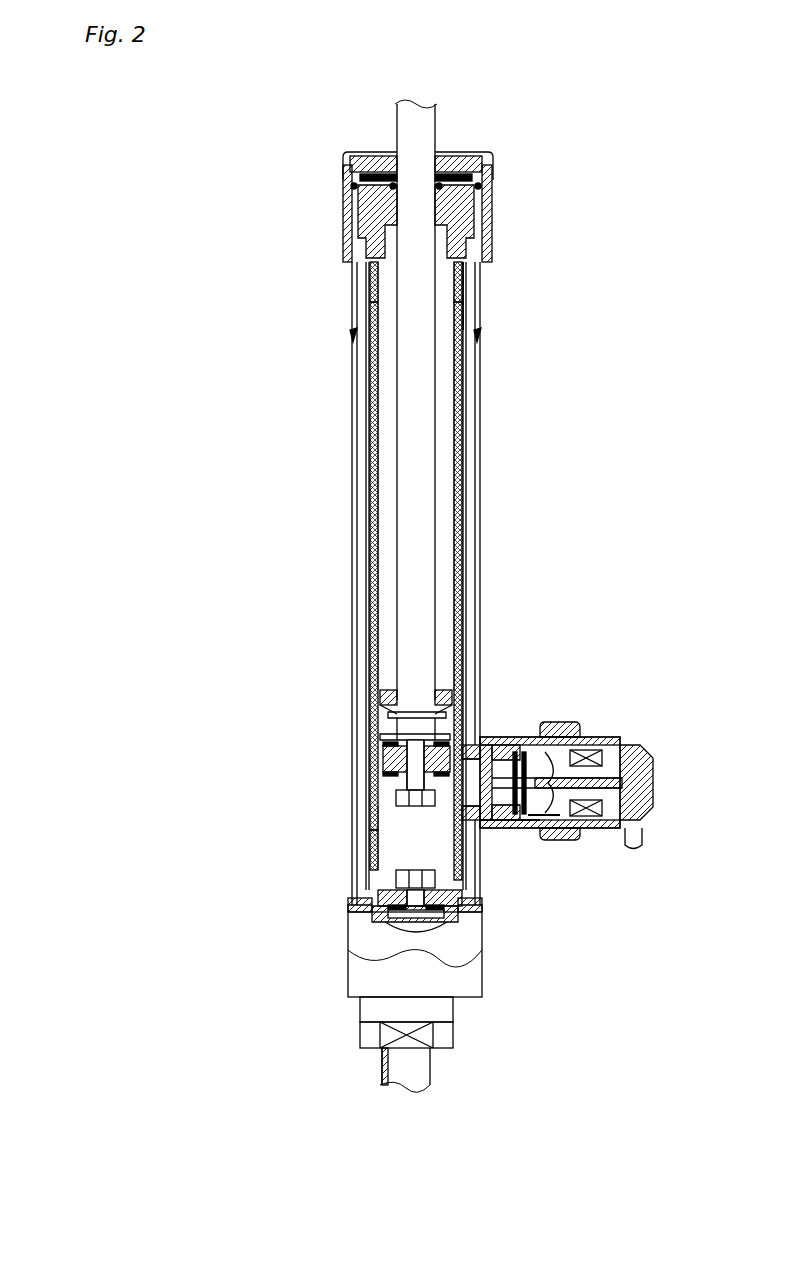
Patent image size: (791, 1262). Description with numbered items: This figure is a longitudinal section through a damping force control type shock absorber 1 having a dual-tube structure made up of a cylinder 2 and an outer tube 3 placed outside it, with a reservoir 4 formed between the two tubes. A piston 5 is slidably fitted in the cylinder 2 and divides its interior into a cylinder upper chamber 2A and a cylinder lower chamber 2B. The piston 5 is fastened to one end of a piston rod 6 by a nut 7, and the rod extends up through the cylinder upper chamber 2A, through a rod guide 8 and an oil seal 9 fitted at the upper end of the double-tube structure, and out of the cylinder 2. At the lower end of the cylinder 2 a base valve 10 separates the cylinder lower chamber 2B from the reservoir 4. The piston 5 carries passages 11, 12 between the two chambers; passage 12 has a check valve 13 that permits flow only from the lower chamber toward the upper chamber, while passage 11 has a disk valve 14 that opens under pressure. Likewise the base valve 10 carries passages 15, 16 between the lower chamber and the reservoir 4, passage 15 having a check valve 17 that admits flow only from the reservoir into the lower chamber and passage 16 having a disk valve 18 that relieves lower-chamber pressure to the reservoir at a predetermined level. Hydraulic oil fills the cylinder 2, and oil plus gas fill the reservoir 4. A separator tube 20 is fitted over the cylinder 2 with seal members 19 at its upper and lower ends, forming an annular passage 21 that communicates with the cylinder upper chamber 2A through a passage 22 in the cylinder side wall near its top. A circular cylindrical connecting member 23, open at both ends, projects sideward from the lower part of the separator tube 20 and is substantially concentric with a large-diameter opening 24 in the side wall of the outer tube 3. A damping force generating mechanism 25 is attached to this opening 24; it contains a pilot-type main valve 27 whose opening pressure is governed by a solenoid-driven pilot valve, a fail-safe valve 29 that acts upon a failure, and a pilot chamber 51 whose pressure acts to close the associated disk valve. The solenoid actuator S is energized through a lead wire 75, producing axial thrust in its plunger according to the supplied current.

The damping force control type shock absorber 1 is at (562, 238).
The cylinder 2 is at (464, 404).
The cylinder upper chamber 2A is at (388, 535).
The cylinder lower chamber 2B is at (395, 850).
The outer tube 3 is at (478, 452).
The reservoir 4 is at (358, 420).
The piston 5 is at (383, 760).
The piston rod 6 is at (432, 126).
The nut 7 is at (397, 797).
The rod guide 8 is at (368, 246).
The oil seal 9 is at (456, 160).
The base valve 10 is at (442, 900).
The passage 11 is at (383, 745).
The passage 12 is at (466, 732).
The check valve 13 is at (470, 700).
The disk valve 14 is at (383, 776).
The passage 15 is at (377, 907).
The passage 16 is at (440, 912).
The check valve 17 is at (378, 890).
The disk valve 18 is at (448, 922).
The seal members 19 is at (372, 275).
The separator tube 20 is at (364, 467).
The annular passage 21 is at (464, 496).
The passage 22 is at (464, 304).
The connecting member 23 is at (495, 745).
The large-diameter opening 24 is at (492, 830).
The damping force generating mechanism 25 is at (596, 720).
The main valve 27 is at (515, 745).
The fail-safe valve 29 is at (565, 725).
The pilot chamber 51 is at (540, 838).
The lead wire 75 is at (643, 832).
The solenoid actuator S is at (612, 737).